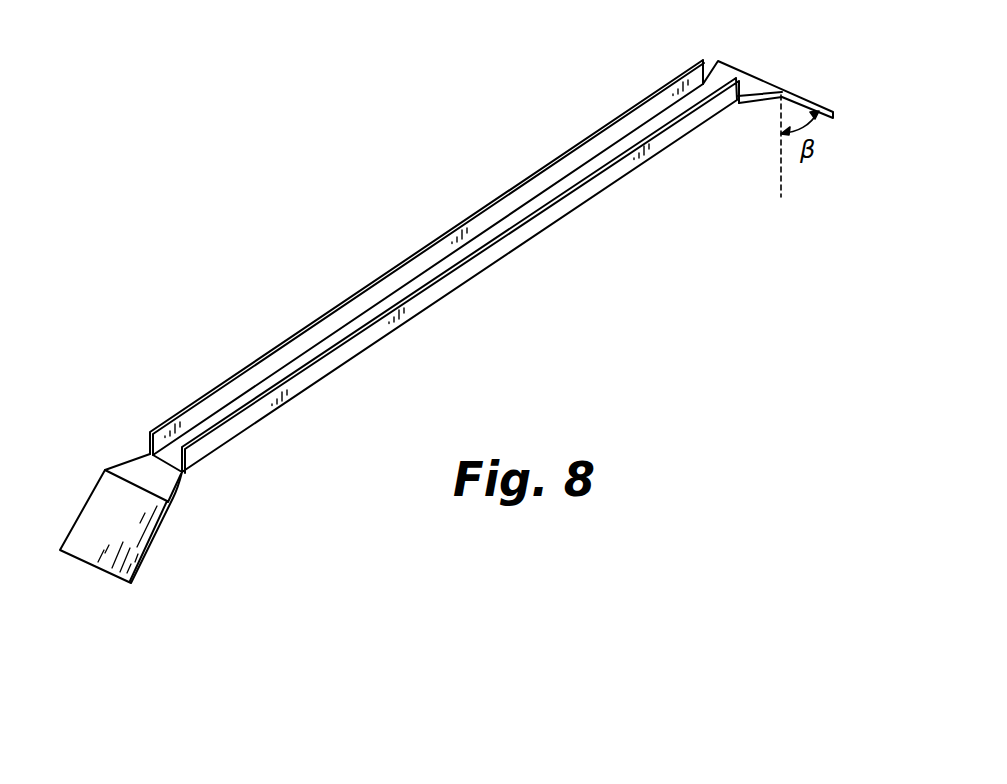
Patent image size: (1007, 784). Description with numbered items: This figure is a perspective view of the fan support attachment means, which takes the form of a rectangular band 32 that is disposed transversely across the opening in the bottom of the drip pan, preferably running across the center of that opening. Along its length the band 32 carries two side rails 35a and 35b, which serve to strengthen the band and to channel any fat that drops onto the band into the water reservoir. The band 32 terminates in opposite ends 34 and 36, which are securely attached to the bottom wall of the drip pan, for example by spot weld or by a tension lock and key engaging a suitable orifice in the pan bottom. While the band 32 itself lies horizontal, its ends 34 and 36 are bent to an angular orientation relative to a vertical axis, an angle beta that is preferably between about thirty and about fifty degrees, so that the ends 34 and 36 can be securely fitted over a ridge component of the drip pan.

The rectangular band 32 is at (432, 273).
The end of the band 34 is at (85, 553).
The side rail 35a is at (197, 401).
The side rail 35b is at (243, 425).
The end of the band 36 is at (793, 94).